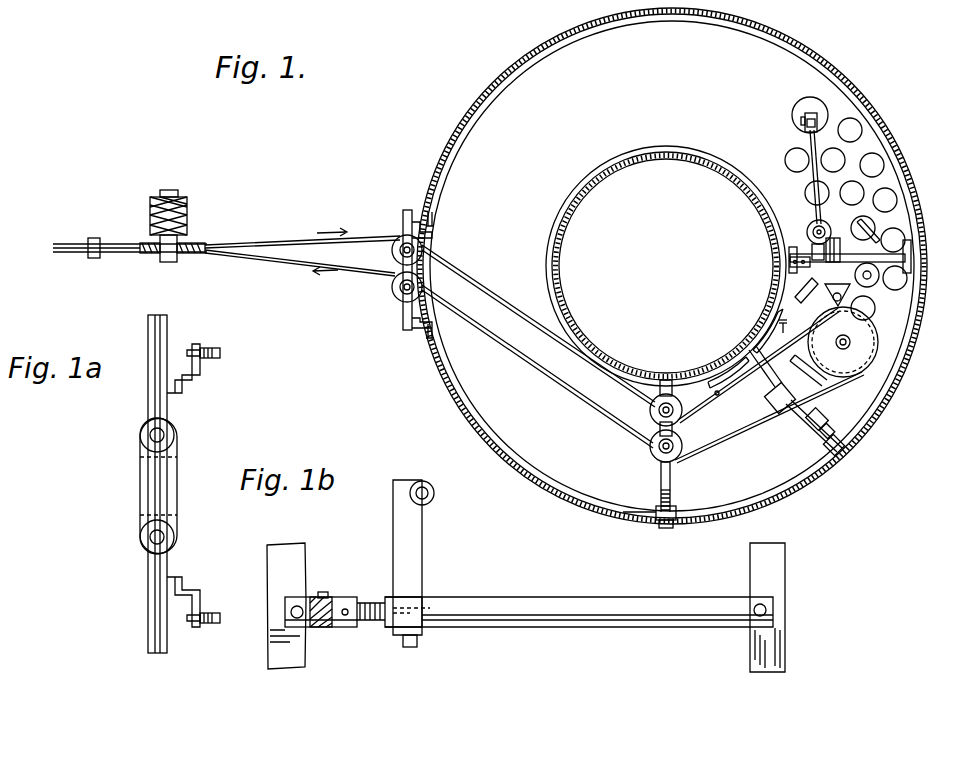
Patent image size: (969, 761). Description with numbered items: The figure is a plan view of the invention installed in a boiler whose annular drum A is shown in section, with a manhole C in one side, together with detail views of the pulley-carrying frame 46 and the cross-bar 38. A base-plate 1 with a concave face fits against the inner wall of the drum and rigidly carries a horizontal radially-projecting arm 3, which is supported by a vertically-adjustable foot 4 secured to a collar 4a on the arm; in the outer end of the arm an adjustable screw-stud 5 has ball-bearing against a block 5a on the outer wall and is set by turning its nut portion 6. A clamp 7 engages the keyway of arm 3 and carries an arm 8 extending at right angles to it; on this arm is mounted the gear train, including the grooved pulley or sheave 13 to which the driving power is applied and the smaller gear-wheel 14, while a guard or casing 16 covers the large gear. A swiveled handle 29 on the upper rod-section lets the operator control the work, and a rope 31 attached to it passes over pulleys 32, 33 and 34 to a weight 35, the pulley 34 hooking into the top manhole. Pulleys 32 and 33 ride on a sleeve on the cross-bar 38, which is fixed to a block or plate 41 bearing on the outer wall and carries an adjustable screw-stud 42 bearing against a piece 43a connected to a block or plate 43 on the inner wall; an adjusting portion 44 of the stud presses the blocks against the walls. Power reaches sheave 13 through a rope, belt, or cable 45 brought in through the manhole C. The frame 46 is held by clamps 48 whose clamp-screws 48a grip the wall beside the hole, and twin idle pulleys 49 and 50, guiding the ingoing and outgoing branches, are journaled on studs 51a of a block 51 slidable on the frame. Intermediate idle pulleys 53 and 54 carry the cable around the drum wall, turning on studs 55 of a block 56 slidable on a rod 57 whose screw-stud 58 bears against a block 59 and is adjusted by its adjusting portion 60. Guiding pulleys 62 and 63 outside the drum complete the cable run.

In FIG. 1, the base-plate 1 is at (748, 348).
In FIG. 1, the horizontal radially-projecting arm 3 is at (765, 374).
In FIG. 1, the vertically-adjustable foot 4 is at (803, 430).
In FIG. 1, the collar 4a is at (832, 430).
In FIG. 1, the adjustable screw-stud 5 is at (790, 455).
In FIG. 1, the block 5a is at (841, 455).
In FIG. 1, the nut portion 6 is at (825, 424).
In FIG. 1, the clamp 7 is at (778, 410).
In FIG. 1, the arm 8 is at (806, 372).
In FIG. 1, the grooved pulley or sheave 13 is at (843, 342).
In FIG. 1, the smaller gear-wheel 14 is at (838, 300).
In FIG. 1, the guard or casing 16 is at (826, 292).
In FIG. 1, the swiveled handle 29 is at (852, 250).
In FIG. 1, the rope 31 is at (813, 172).
In FIG. 1, the pulley 32 is at (870, 280).
In FIG. 1, the pulley 33 is at (810, 230).
In FIG. 1, the pulley 34 is at (803, 128).
In FIG. 1, the weight 35 is at (806, 103).
In FIG. 1, the cross-bar 38 is at (900, 240).
In FIG. 1B, the cross-bar 38 is at (548, 604).
In FIG. 1, the block or plate 41 is at (912, 250).
In FIG. 1B, the block or plate 41 is at (752, 554).
In FIG. 1B, the adjustable screw-stud 42 is at (367, 602).
In FIG. 1, the block or plate 43 is at (789, 257).
In FIG. 1B, the block or plate 43 is at (290, 556).
In FIG. 1, the piece 43a is at (800, 262).
In FIG. 1B, the piece 43a is at (306, 604).
In FIG. 1B, the adjusting portion 44 is at (352, 627).
In FIG. 1, the rope, belt, or cable 45 is at (504, 305).
In FIG. 1, the pulley-carrying frame or shaft 46 is at (405, 210).
In FIG. 1A, the pulley-carrying frame or shaft 46 is at (152, 322).
In FIG. 1A, the clamps 48 is at (190, 378).
In FIG. 1, the clamp-screws 48a is at (436, 224).
In FIG. 1A, the clamp-screws 48a is at (208, 348).
In FIG. 1, the idle pulley 49 is at (400, 298).
In FIG. 1, the idle pulley 50 is at (397, 240).
In FIG. 1A, the block 51 is at (148, 474).
In FIG. 1A, the studs 51a is at (152, 540).
In FIG. 1, the intermediate idle pulley 53 is at (658, 452).
In FIG. 1, the intermediate idle pulley 54 is at (655, 415).
In FIG. 1, the studs 55 is at (668, 405).
In FIG. 1, the block 56 is at (678, 418).
In FIG. 1, the rod 57 is at (671, 480).
In FIG. 1, the screw-stud 58 is at (672, 502).
In FIG. 1, the block 59 is at (672, 526).
In FIG. 1, the adjusting portion 60 is at (658, 524).
In FIG. 1, the rope or belt guiding pulley 62 is at (152, 256).
In FIG. 1, the rope or belt guiding pulley 63 is at (72, 256).
In FIG. 1, the annular drum A is at (566, 206).
In FIG. 1, the manhole C is at (428, 236).